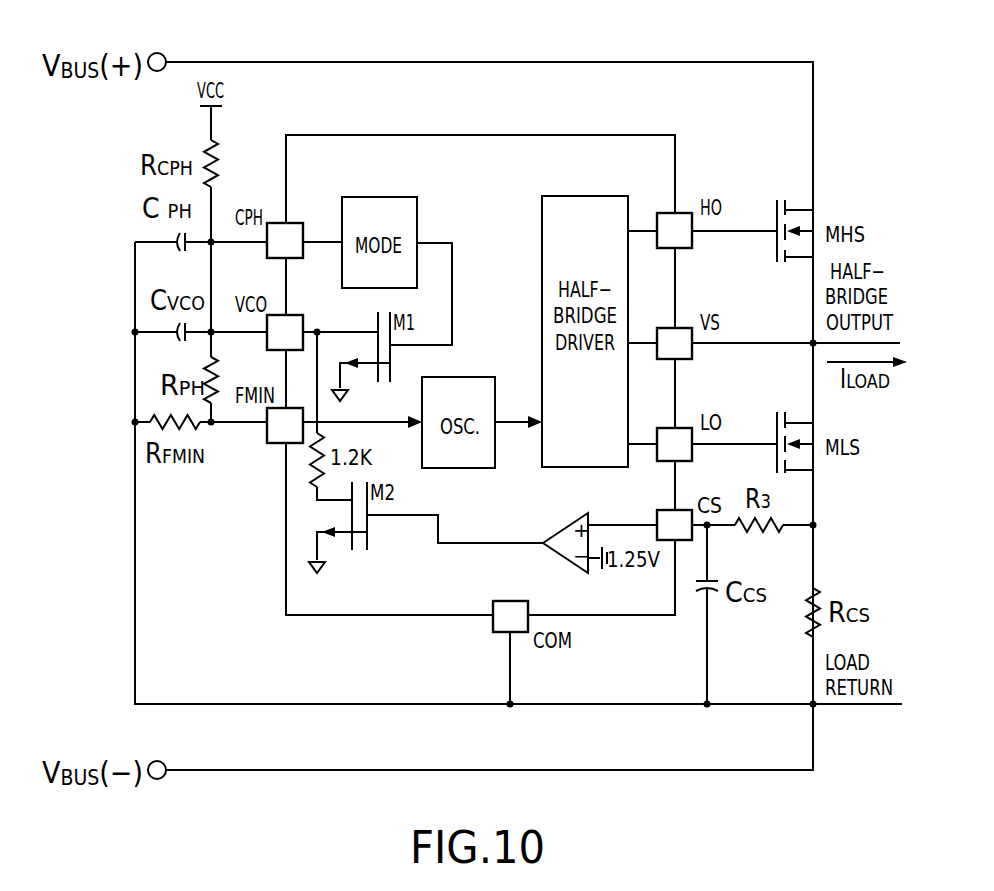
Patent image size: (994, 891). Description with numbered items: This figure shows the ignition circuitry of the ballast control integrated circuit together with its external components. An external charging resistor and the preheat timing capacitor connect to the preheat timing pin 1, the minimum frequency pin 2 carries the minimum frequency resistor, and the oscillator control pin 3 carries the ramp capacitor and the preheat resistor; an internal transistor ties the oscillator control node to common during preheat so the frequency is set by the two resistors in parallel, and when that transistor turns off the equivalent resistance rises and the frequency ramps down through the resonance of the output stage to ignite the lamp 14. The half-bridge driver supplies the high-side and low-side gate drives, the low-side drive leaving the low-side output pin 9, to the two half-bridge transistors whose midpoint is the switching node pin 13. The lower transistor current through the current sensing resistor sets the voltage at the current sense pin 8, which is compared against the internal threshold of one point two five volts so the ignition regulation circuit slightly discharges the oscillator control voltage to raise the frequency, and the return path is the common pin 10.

The CPH pin 1 is at (285, 240).
The FMIN pin 2 is at (285, 425).
The VCO pin 3 is at (285, 332).
The CS pin 8 is at (674, 525).
The LO pin 9 is at (674, 444).
The COM pin 10 is at (510, 617).
The VS pin 13 is at (674, 344).
The lamp 14 is at (674, 230).